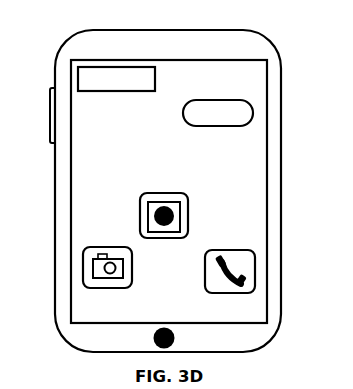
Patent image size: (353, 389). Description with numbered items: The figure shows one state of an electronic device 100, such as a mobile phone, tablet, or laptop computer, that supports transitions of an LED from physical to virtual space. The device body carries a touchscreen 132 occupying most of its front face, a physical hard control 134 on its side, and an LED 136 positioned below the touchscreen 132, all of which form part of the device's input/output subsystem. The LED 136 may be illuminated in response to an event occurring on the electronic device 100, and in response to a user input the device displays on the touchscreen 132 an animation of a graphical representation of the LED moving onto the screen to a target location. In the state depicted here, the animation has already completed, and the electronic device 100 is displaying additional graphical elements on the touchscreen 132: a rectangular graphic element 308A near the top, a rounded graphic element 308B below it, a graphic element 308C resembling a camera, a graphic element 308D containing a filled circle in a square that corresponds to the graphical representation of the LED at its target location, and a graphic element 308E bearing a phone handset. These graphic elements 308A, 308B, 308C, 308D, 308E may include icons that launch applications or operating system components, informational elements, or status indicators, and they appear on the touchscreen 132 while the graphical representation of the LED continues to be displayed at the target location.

The electronic device 100 is at (42, 46).
The touchscreen 132 is at (272, 195).
The physical control 134 is at (50, 104).
The LED 136 is at (176, 339).
The graphic element 308A is at (116, 92).
The graphic element 308B is at (217, 127).
The graphic element 308C is at (100, 248).
The graphic element 308D is at (145, 195).
The graphic element 308E is at (232, 251).